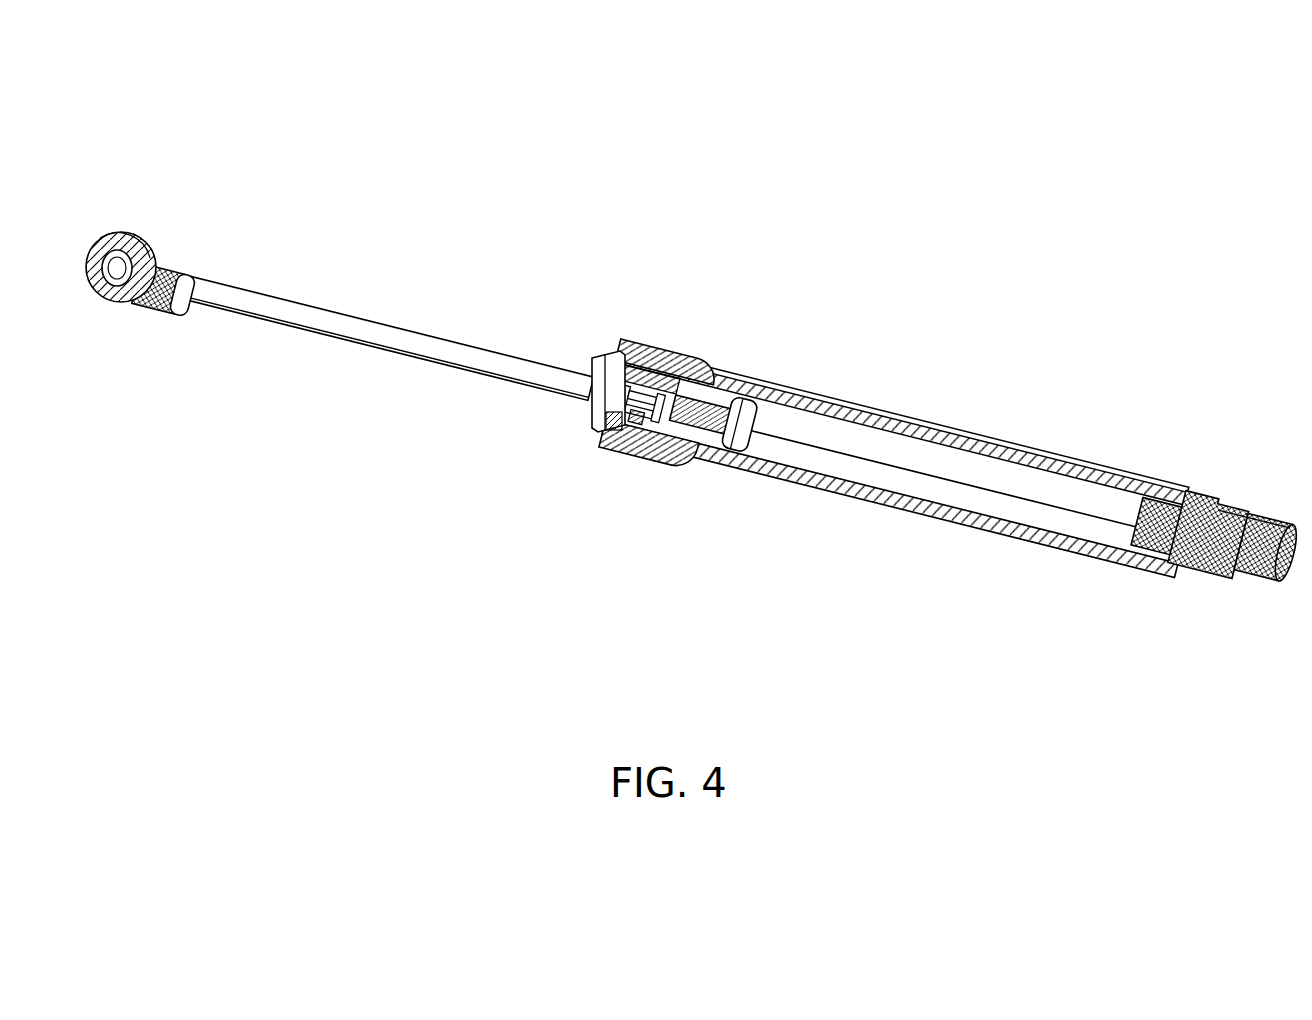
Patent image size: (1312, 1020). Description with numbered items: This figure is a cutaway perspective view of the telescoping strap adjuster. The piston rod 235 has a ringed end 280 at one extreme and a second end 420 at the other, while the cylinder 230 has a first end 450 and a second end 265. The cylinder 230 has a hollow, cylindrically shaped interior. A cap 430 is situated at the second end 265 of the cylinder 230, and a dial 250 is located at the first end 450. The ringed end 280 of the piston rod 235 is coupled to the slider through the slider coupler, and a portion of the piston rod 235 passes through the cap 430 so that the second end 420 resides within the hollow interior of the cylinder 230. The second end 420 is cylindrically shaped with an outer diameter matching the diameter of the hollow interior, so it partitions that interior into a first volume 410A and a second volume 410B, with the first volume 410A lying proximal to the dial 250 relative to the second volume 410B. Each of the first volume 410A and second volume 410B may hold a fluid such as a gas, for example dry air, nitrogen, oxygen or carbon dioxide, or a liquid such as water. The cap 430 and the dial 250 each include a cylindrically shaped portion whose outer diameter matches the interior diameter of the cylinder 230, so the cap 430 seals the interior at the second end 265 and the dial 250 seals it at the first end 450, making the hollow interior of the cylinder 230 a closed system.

The ringed end 280 is at (112, 245).
The piston rod 235 is at (438, 340).
The second volume 410B is at (707, 393).
The second end 420 is at (733, 418).
The first volume 410A is at (955, 463).
The first end 450 is at (1190, 490).
The dial 250 is at (1258, 545).
The cap 430 is at (603, 410).
The second end 265 is at (623, 432).
The cylinder 230 is at (1050, 537).